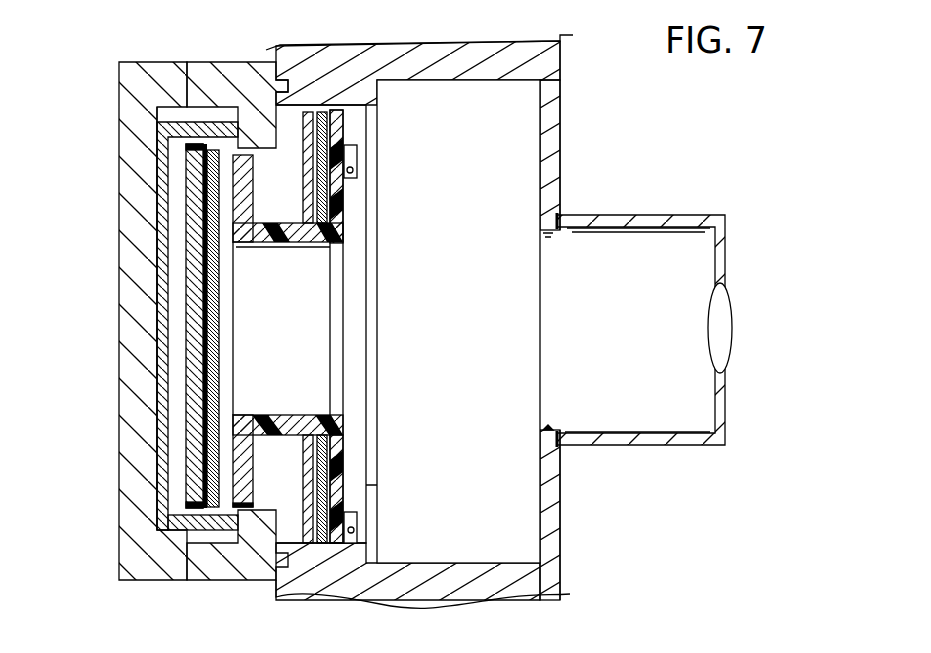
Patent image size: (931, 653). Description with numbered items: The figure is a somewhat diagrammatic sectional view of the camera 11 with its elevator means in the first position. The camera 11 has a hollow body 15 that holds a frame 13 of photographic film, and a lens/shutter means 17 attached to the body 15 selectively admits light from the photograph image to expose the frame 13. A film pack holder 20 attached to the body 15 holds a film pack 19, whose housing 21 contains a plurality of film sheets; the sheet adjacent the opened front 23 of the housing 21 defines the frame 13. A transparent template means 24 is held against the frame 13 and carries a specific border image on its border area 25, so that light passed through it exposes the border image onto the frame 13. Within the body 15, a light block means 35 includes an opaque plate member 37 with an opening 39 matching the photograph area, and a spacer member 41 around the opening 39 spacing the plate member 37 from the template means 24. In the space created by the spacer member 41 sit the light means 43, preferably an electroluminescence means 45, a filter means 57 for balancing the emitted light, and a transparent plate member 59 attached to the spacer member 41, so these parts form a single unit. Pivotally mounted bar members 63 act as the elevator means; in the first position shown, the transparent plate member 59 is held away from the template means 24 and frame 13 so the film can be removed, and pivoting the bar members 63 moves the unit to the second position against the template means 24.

The camera 11 is at (779, 146).
The frame of photographic film 13 is at (190, 462).
The body 15 is at (467, 590).
The lens/shutter means 17 is at (736, 326).
The film pack 19 is at (160, 350).
The film pack holder 20 is at (120, 213).
The housing 21 is at (162, 412).
The opened front 23 is at (252, 147).
The template means 24 is at (176, 510).
The border area 25 is at (186, 150).
The light block means 35 is at (337, 222).
The plate member 37 is at (340, 433).
The opening 39 is at (333, 415).
The spacer member 41 is at (287, 413).
The light means 43 is at (322, 545).
The electroluminescence means 45 is at (301, 535).
The filter means 57 is at (270, 525).
The transparent plate member 59 is at (223, 512).
The bar members 63 is at (358, 152).